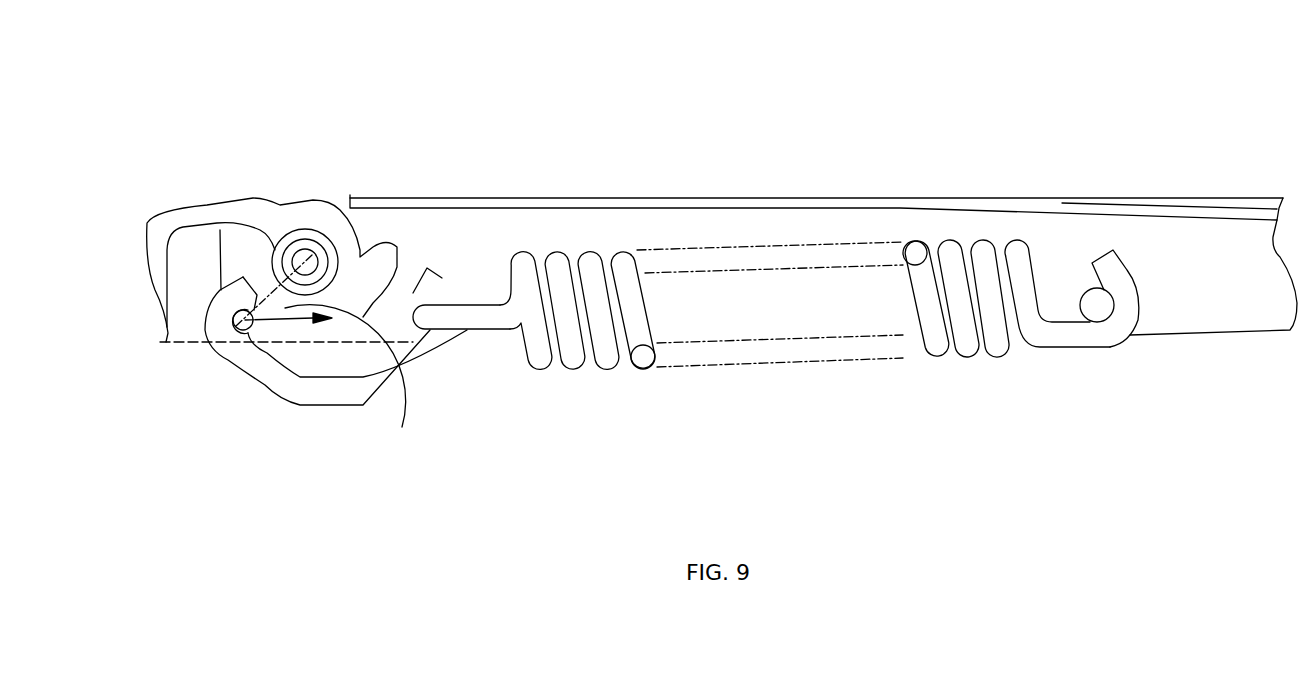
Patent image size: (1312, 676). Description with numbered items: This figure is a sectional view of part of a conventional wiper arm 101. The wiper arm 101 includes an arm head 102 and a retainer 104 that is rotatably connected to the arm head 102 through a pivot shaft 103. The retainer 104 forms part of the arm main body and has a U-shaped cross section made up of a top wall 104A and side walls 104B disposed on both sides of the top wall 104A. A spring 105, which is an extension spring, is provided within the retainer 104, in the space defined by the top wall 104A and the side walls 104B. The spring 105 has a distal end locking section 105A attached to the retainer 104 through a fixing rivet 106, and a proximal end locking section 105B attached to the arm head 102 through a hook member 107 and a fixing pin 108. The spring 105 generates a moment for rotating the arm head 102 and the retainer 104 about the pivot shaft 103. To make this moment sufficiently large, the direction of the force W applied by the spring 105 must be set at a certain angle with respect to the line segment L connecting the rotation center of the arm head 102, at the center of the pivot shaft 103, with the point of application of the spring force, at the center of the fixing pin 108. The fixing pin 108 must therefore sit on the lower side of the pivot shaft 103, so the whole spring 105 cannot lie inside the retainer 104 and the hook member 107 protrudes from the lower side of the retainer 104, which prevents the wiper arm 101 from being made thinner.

The wiper arm 101 is at (600, 140).
The arm head 102 is at (208, 200).
The pivot shaft 103 is at (308, 229).
The retainer 104 is at (768, 197).
The top wall 104A is at (667, 197).
The side walls 104B is at (520, 230).
The spring 105 is at (610, 372).
The distal end locking section 105A is at (1128, 342).
The proximal end locking section 105B is at (442, 305).
The fixing rivet 106 is at (1095, 288).
The hook member 107 is at (335, 407).
The fixing pin 108 is at (243, 330).
The line segment L is at (288, 242).
The force W is at (302, 322).